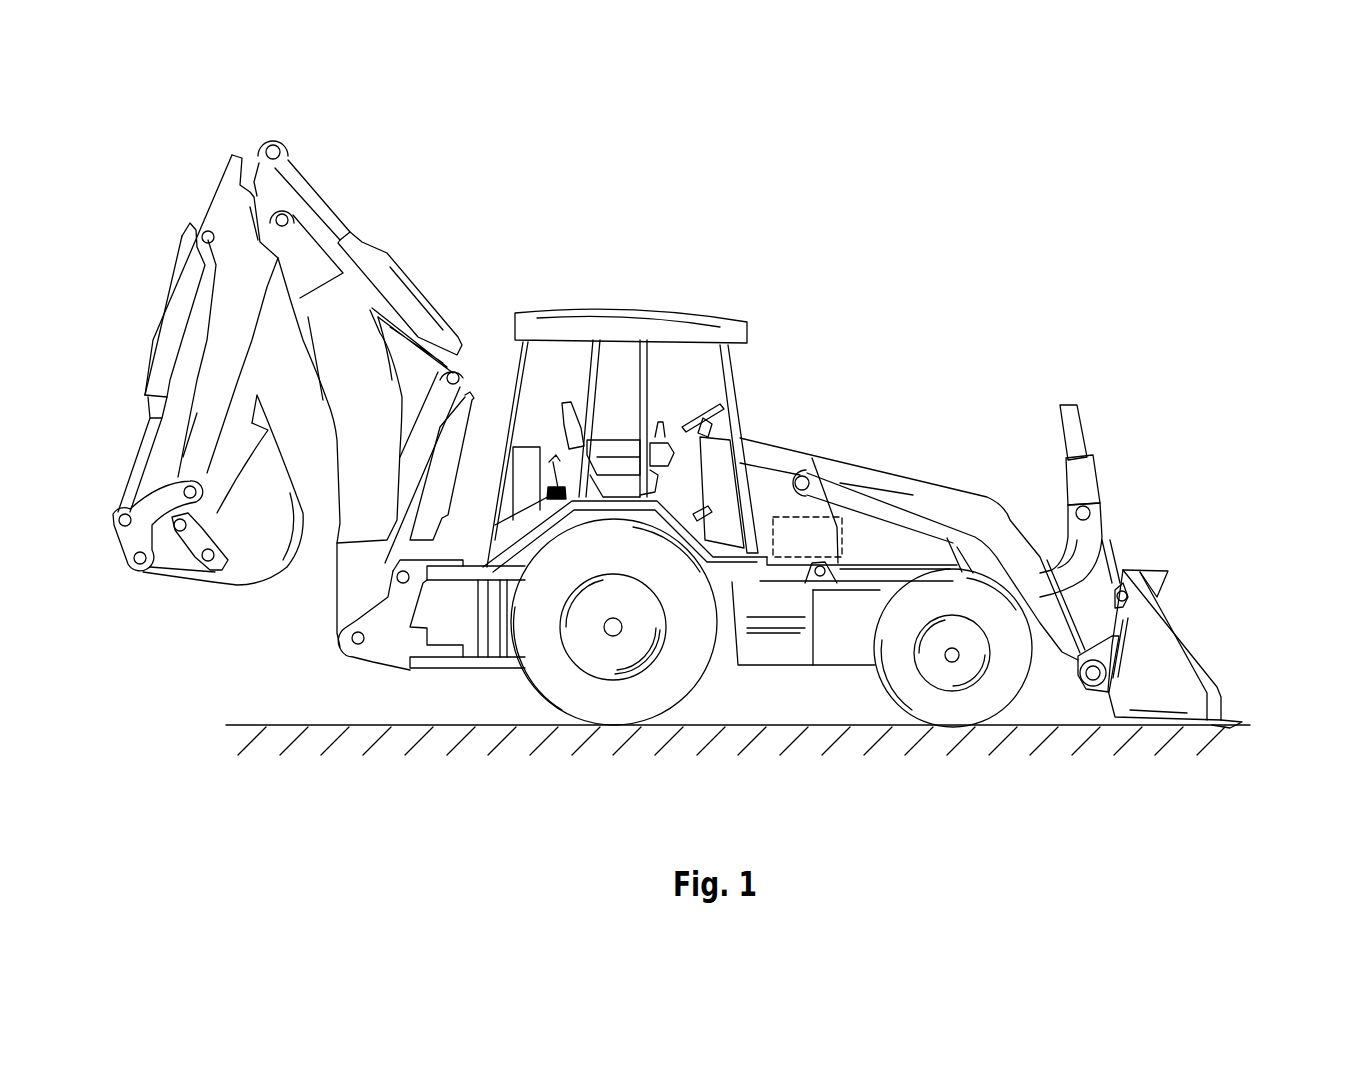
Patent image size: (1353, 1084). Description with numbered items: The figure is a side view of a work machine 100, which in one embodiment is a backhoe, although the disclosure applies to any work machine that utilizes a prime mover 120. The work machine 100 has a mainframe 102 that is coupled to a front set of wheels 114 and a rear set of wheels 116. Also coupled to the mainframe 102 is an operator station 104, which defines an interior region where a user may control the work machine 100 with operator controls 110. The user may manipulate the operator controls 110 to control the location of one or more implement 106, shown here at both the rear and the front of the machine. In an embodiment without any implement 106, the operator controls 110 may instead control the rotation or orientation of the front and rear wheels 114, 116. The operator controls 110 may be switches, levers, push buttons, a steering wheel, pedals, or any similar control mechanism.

The work machine 100 is at (917, 220).
The mainframe 102 is at (842, 653).
The operator station 104 is at (638, 297).
The implement 106 is at (232, 308).
The operator controls 110 is at (700, 530).
The front set of wheels 114 is at (948, 712).
The rear set of wheels 116 is at (608, 708).
The prime mover 120 is at (774, 492).